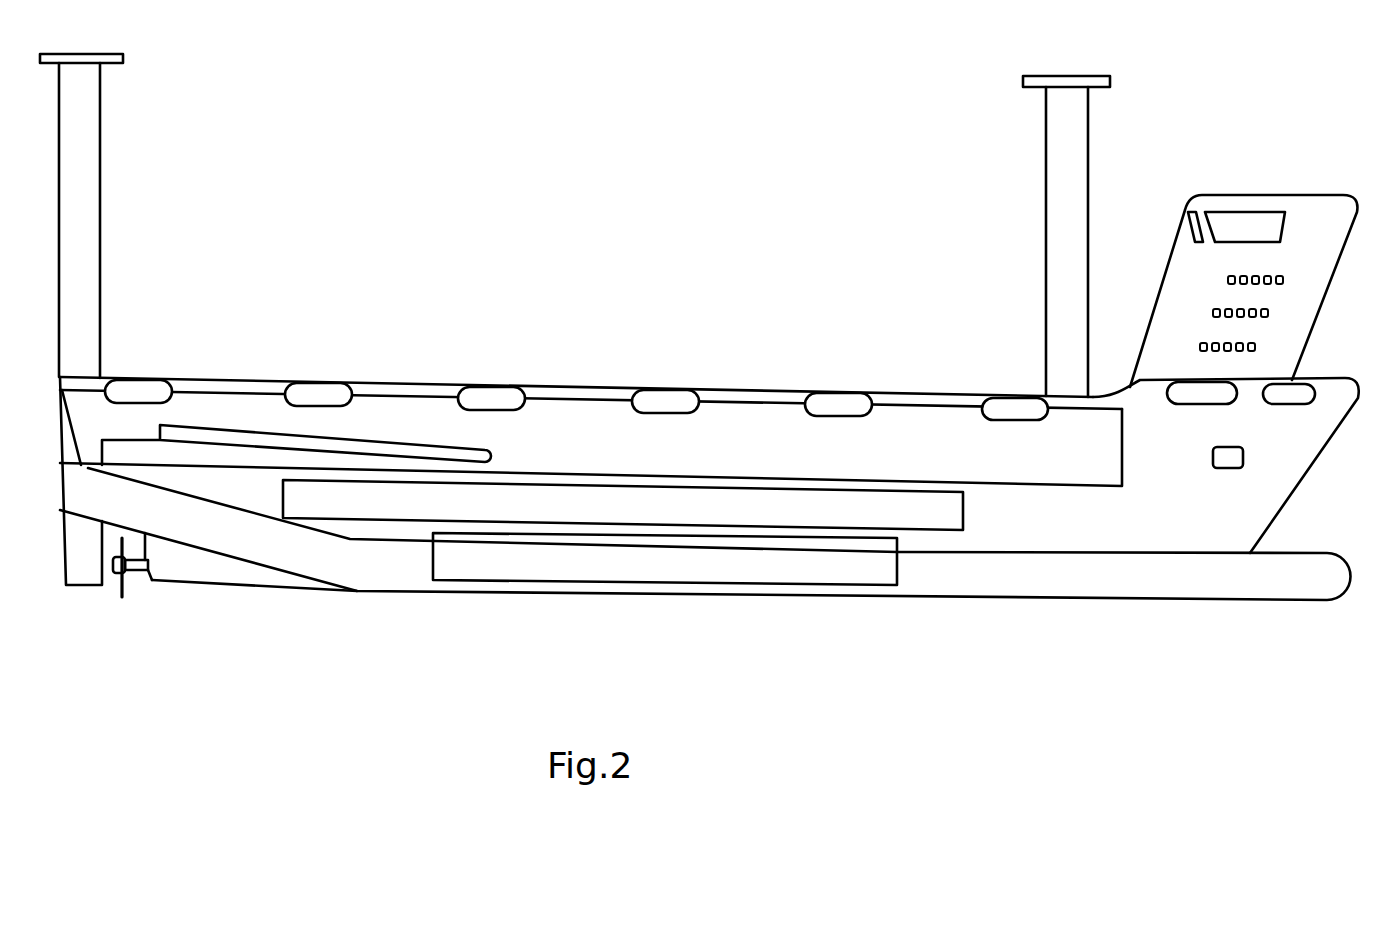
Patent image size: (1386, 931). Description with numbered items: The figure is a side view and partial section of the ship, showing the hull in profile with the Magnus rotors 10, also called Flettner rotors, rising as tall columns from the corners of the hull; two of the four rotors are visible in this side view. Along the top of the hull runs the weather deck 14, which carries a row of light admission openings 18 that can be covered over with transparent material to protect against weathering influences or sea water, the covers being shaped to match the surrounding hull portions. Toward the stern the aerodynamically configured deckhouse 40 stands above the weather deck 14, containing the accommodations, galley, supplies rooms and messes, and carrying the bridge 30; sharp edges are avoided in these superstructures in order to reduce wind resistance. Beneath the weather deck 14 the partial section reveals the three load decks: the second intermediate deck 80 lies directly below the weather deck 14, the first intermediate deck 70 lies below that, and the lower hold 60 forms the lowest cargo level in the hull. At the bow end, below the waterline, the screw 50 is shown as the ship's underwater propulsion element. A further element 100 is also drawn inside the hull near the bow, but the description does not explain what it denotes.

The Magnus rotor 10 is at (575, 225).
The weather deck 14 is at (548, 385).
The light admission opening 18 is at (665, 400).
The bridge 30 is at (1245, 229).
The deckhouse 40 is at (1258, 313).
The screw 50 is at (120, 577).
The lower hold 60 is at (665, 559).
The first intermediate deck 70 is at (623, 505).
The second intermediate deck 80 is at (591, 447).
The ramp 100 is at (225, 437).